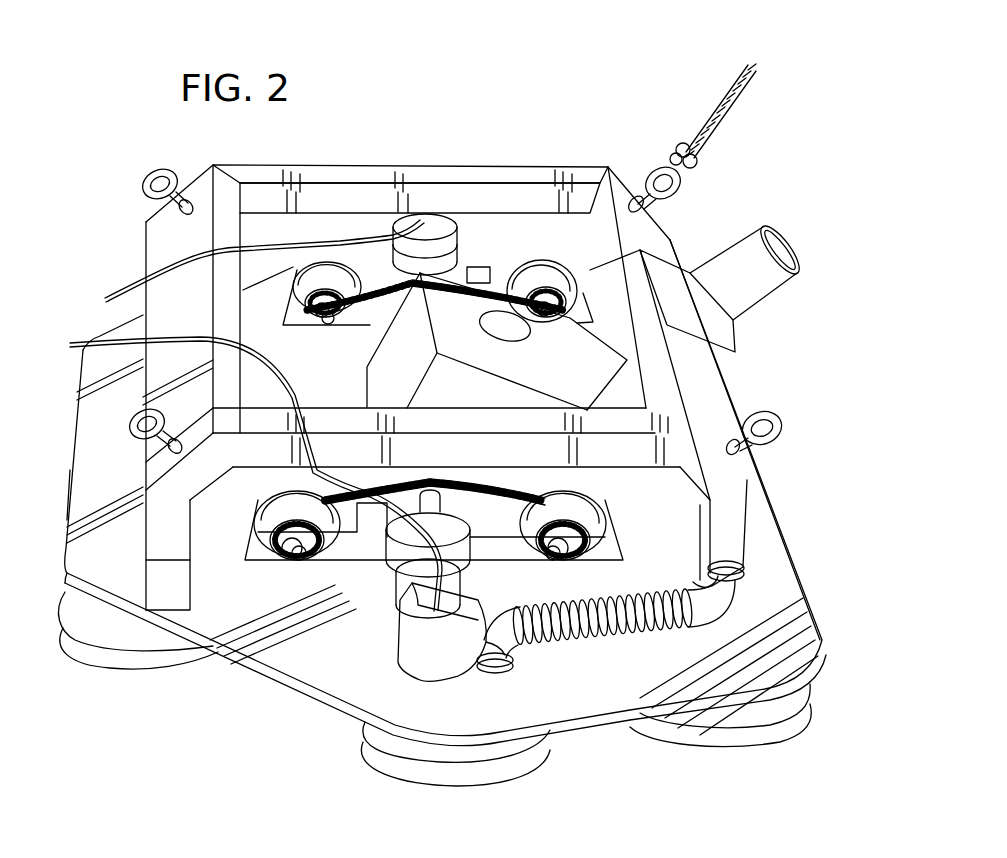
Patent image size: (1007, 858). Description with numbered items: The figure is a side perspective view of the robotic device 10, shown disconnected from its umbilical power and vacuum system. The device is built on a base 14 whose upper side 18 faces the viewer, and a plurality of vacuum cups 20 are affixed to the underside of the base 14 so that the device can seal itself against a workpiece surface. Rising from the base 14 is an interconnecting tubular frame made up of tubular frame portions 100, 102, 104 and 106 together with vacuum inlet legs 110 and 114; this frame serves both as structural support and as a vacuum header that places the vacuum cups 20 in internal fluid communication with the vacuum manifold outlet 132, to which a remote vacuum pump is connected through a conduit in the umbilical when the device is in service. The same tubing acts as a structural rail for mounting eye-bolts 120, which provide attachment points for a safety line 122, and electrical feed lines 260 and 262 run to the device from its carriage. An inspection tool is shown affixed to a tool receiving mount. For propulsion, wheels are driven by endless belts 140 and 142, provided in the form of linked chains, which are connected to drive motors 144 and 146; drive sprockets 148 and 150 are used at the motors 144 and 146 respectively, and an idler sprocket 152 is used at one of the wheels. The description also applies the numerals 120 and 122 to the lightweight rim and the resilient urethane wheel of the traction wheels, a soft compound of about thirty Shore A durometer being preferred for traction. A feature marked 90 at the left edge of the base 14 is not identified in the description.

The robotic device 10 is at (575, 95).
The base 14 is at (308, 693).
The upper side 18 is at (347, 650).
The vacuum cups 20 is at (150, 660).
The plate edge 90 is at (68, 500).
The tubular frame portion 100 is at (422, 172).
The tubular frame portion 102 is at (577, 378).
The tubular frame portion 104 is at (710, 398).
The tubular frame portion 106 is at (195, 378).
The vacuum inlet leg 110 is at (735, 533).
The vacuum inlet leg 114 is at (186, 570).
The eye-bolt 120 is at (148, 192).
The safety line 122 is at (738, 112).
The vacuum manifold outlet 132 is at (778, 238).
The endless belt 140 is at (522, 270).
The endless belt 142 is at (498, 480).
The drive motor 144 is at (462, 225).
The drive motor 146 is at (395, 602).
The drive sprocket 148 is at (377, 328).
The drive sprocket 150 is at (432, 488).
The idler sprocket 152 is at (298, 276).
The electrical feed line 260 is at (133, 283).
The electrical feed line 262 is at (88, 343).